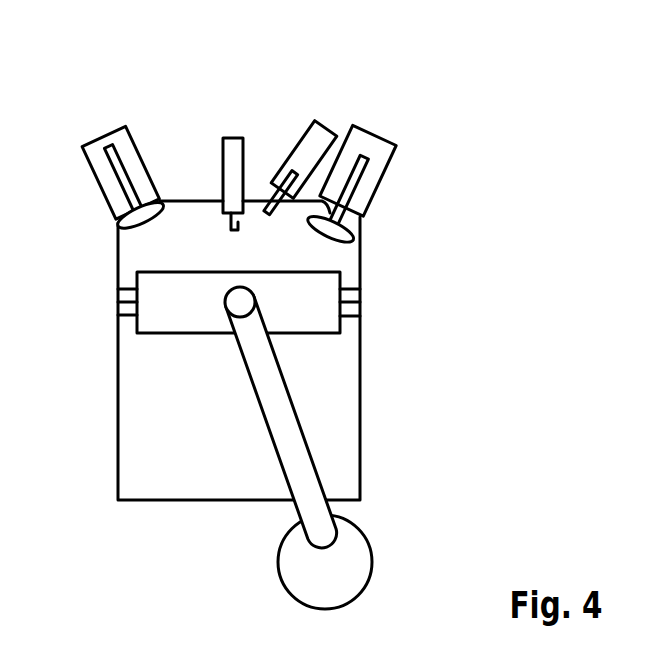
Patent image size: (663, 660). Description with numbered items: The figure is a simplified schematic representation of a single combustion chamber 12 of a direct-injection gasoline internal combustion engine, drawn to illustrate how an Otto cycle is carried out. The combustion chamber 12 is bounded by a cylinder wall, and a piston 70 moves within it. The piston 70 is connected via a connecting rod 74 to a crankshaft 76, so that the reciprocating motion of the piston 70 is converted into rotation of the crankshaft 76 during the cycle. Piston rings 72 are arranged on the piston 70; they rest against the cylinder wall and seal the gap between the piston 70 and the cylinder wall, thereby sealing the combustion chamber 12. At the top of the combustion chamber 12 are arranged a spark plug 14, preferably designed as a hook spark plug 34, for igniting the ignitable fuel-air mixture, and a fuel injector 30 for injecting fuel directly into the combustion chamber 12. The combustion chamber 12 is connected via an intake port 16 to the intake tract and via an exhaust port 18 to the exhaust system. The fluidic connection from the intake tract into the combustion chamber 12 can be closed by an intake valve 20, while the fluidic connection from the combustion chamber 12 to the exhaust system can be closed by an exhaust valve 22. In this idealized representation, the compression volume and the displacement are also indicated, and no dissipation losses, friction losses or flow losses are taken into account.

The combustion chamber 12 is at (342, 260).
The spark plug 14 is at (233, 143).
The hook spark plug 34 is at (233, 138).
The intake port 16 is at (157, 198).
The exhaust port 18 is at (350, 213).
The intake valve 20 is at (117, 153).
The exhaust valve 22 is at (365, 168).
The fuel injector 30 is at (328, 128).
The piston 70 is at (312, 322).
The piston rings 72 is at (127, 310).
The connecting rod 74 is at (293, 408).
The crankshaft 76 is at (373, 557).